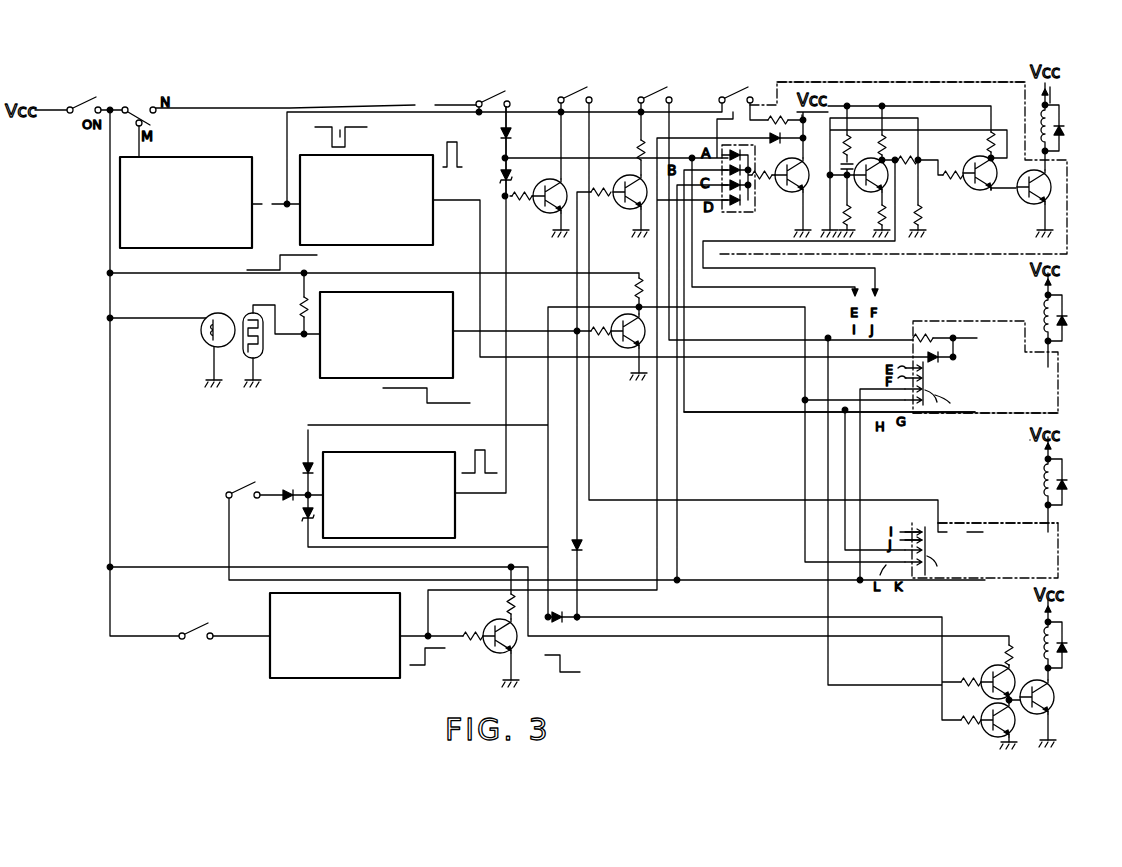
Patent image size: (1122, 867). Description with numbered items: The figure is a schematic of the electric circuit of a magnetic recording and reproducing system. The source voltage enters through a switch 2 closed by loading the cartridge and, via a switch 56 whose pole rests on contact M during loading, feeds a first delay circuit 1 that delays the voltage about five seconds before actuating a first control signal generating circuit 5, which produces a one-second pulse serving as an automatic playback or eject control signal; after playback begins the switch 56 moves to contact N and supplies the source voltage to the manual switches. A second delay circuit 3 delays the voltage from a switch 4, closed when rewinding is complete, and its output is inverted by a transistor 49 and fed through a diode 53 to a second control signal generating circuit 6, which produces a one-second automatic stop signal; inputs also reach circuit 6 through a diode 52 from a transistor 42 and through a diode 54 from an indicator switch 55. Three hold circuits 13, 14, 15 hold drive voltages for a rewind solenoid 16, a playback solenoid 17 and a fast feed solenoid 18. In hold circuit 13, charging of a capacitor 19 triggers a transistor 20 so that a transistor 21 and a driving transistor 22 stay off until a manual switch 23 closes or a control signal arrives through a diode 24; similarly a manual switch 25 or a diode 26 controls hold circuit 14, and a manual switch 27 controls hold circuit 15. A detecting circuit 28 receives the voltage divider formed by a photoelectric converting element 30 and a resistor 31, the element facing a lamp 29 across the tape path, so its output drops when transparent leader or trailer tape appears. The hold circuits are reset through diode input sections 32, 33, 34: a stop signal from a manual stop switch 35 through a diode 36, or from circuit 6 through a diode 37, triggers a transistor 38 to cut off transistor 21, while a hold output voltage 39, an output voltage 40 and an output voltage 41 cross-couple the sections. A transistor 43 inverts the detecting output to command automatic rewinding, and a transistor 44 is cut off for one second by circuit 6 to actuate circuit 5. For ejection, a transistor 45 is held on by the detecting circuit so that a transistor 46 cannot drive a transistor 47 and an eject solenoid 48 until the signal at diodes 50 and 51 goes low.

The first delay circuit 1 is at (202, 157).
The switch 2 is at (78, 118).
The second delay circuit 3 is at (308, 678).
The switch 4 is at (196, 643).
The first control signal generating circuit 5 is at (388, 140).
The second control signal generating circuit 6 is at (457, 516).
The hold circuit 13 is at (903, 84).
The hold circuit 14 is at (1006, 414).
The hold circuit 15 is at (985, 519).
The rewind solenoid 16 is at (1062, 132).
The playback solenoid 17 is at (1055, 336).
The fast feed solenoid 18 is at (1055, 499).
The capacitor 19 is at (856, 150).
The transistor 20 is at (899, 186).
The transistor 21 is at (975, 200).
The driving transistor 22 is at (1052, 183).
The manual switch 23 is at (733, 97).
The diode 24 is at (782, 132).
The manual switch 25 is at (653, 97).
The diode 26 is at (940, 362).
The manual switch 27 is at (575, 97).
The detecting circuit 28 is at (339, 378).
The lamp 29 is at (212, 311).
The photoelectric converting element 30 is at (264, 345).
The resistor 31 is at (312, 293).
The diode input section 32 is at (752, 213).
The diode input section 33 is at (950, 422).
The diode input section 34 is at (930, 578).
The manual stop switch 35 is at (495, 98).
The diode 36 is at (509, 134).
The diode 37 is at (503, 180).
The transistor 38 is at (786, 197).
The hold output voltage 39 is at (876, 285).
The output voltage 40 is at (716, 412).
The output voltage 41 is at (719, 572).
The transistor 42 is at (620, 350).
The transistor 43 is at (625, 212).
The transistor 44 is at (547, 215).
The transistor 45 is at (986, 732).
The transistor 46 is at (985, 671).
The transistor 47 is at (1054, 700).
The eject solenoid 48 is at (1062, 640).
The transistor 49 is at (497, 655).
The diode 50 is at (582, 547).
The diode 51 is at (560, 624).
The diode 52 is at (304, 463).
The diode 53 is at (302, 516).
The diode 54 is at (283, 492).
The indicator switch 55 is at (239, 488).
The switch 56 is at (142, 107).